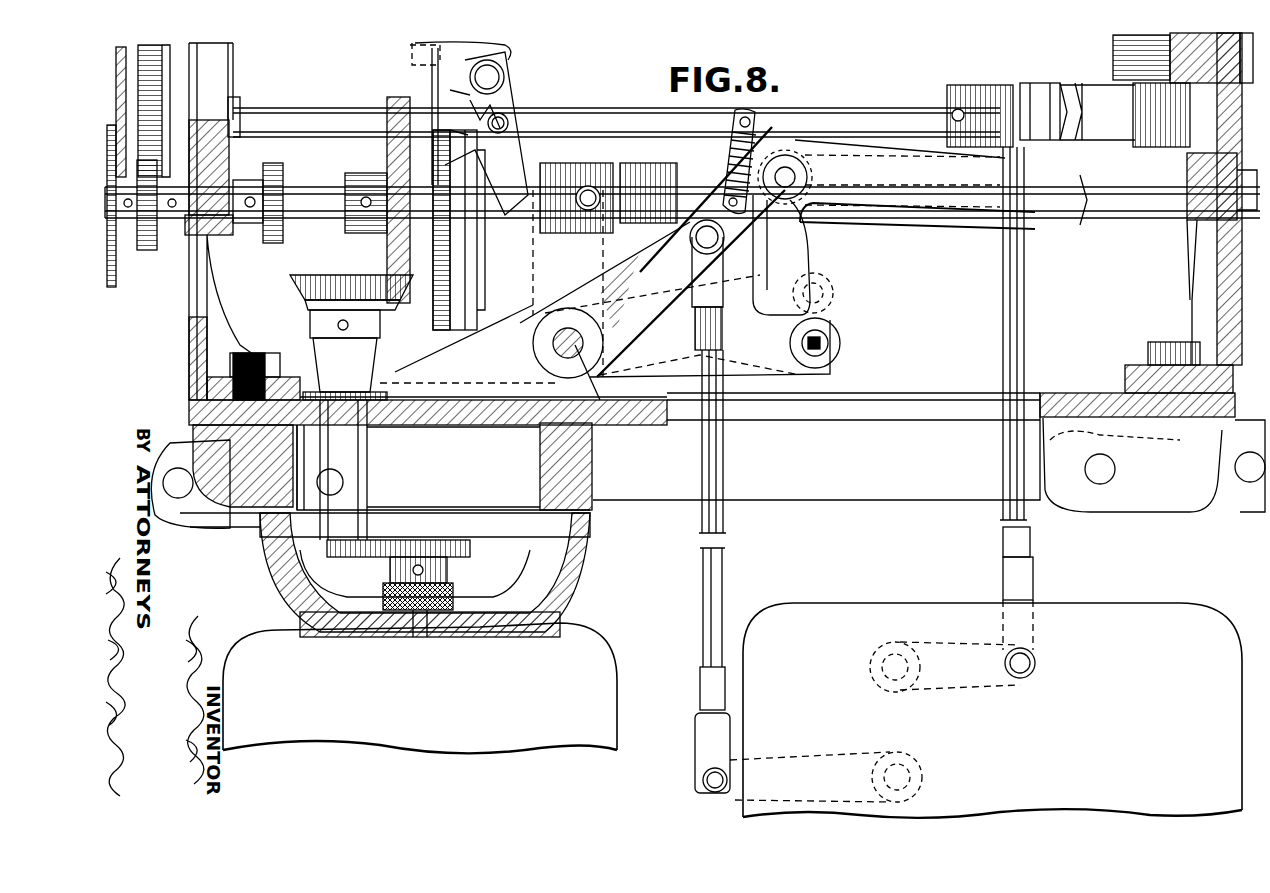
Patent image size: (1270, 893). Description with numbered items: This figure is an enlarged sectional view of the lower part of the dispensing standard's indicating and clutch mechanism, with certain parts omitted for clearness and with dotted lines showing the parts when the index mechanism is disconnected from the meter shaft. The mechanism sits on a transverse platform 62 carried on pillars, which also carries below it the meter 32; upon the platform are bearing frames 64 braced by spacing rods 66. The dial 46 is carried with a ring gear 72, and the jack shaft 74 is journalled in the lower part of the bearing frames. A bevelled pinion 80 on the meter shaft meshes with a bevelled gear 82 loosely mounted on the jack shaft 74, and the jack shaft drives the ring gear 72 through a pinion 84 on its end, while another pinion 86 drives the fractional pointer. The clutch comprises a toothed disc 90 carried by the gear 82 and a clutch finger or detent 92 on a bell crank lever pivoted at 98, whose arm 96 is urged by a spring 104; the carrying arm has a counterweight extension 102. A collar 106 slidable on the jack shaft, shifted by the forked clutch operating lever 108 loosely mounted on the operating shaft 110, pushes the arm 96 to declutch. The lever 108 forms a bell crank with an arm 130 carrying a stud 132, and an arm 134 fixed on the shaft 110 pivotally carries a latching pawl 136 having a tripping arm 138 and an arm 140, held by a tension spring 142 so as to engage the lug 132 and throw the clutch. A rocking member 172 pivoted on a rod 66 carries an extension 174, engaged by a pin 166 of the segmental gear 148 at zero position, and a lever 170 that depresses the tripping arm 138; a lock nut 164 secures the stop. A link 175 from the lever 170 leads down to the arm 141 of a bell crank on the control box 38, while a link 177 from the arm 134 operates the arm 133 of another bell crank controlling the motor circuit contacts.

The meter 32 is at (575, 645).
The control box 38 is at (836, 615).
The dial 46 is at (118, 78).
The platform 62 is at (828, 490).
The bearing frames 64 is at (1215, 262).
The spacing rods 66 is at (300, 118).
The ring gear 72 is at (160, 90).
The jack shaft 74 is at (300, 188).
The bevelled pinion 80 is at (300, 282).
The bevelled gear 82 is at (392, 97).
The pinion 84 is at (147, 250).
The pinion 86 is at (112, 287).
The toothed disc 90 is at (470, 292).
The clutch finger or detent 92 is at (510, 48).
The lever arm 96 is at (515, 140).
The pivot 98 is at (500, 74).
The extension or counterweight 102 is at (477, 262).
The spring 104 is at (508, 120).
The clutch operating collar 106 is at (575, 163).
The clutch operating lever 108 is at (540, 330).
The operating shaft 110 is at (618, 405).
The arm 130 is at (800, 380).
The stud or lug 132 is at (841, 342).
The arm of switch controlling bell crank 133 is at (725, 798).
The arm 134 is at (700, 220).
The latching pawl 136 is at (790, 248).
The tripping arm 138 is at (952, 222).
The arm 140 is at (750, 150).
The lever or arm of switch actuating bell crank 141 is at (960, 690).
The tension spring 142 is at (773, 130).
The segmental gear 148 is at (1115, 48).
The lock nut 164 is at (283, 220).
The pin 166 is at (1115, 62).
The lever 170 is at (1005, 85).
The rocking member 172 is at (1030, 83).
The extension 174 is at (1148, 115).
The link 175 is at (1024, 320).
The link 177 is at (724, 570).